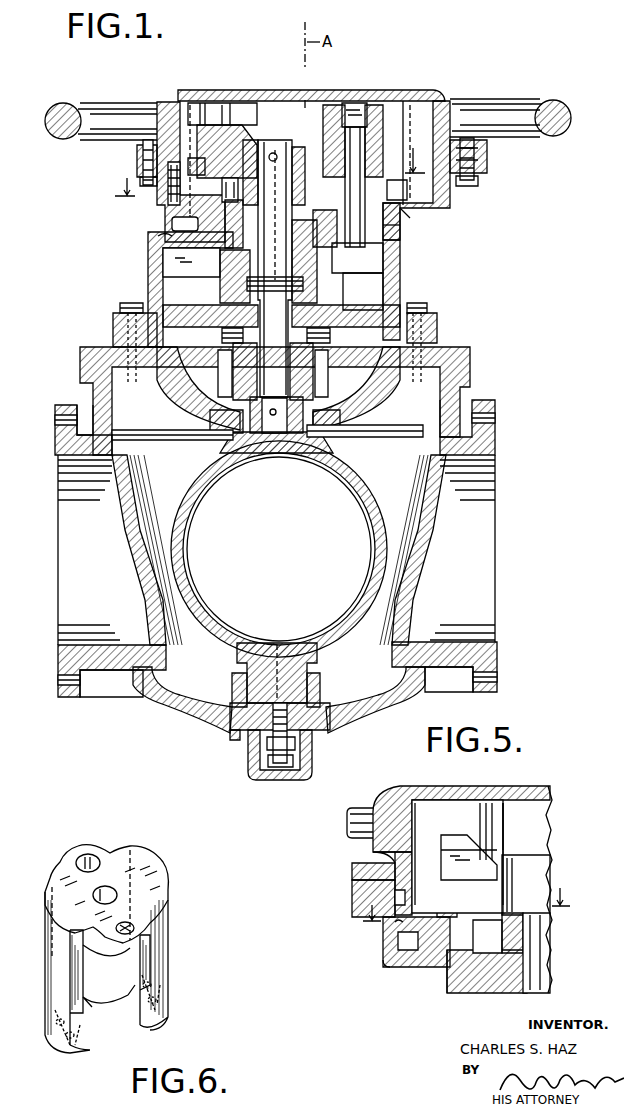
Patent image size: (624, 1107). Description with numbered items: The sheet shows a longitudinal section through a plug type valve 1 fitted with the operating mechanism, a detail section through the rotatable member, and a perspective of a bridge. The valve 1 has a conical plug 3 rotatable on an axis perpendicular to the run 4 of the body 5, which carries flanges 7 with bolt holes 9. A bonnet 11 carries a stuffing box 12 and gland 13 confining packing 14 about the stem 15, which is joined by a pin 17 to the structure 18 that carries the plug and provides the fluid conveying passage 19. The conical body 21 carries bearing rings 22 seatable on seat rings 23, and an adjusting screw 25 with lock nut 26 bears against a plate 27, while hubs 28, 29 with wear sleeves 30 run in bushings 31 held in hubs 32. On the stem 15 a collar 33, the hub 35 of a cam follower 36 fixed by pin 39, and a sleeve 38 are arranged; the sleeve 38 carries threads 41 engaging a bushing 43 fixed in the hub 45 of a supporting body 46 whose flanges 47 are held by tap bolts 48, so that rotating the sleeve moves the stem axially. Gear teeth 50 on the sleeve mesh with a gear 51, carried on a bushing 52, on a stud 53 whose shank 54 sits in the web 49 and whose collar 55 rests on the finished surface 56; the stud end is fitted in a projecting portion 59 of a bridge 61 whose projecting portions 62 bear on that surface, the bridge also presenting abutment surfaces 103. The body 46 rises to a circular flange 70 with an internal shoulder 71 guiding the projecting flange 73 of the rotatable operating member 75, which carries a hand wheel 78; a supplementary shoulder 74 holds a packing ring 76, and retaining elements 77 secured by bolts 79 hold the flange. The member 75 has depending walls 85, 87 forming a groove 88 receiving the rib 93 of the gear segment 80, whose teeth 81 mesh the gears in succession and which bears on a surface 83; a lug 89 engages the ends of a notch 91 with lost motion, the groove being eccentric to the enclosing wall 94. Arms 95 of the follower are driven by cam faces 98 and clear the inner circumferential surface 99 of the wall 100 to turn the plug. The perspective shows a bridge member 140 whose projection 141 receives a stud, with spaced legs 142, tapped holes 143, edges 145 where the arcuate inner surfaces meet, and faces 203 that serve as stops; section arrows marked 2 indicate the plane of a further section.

In FIG. 1, the valve 1 is at (471, 397).
In FIG. 1, the section line 2 is at (269, 173).
In FIG. 5, the section line 2 is at (466, 915).
In FIG. 1, the conical plug 3 is at (381, 447).
In FIG. 1, the run 4 is at (498, 497).
In FIG. 1, the body 5 is at (98, 398).
In FIG. 1, the flanges 7 is at (498, 441).
In FIG. 1, the bolt holes 9 is at (58, 423).
In FIG. 1, the bonnet 11 is at (475, 349).
In FIG. 1, the stuffing box 12 is at (320, 360).
In FIG. 1, the gland 13 is at (222, 337).
In FIG. 1, the packing 14 is at (227, 368).
In FIG. 1, the stem 15 is at (285, 313).
In FIG. 1, the pin 17 is at (276, 440).
In FIG. 1, the structure 18 is at (212, 475).
In FIG. 1, the fluid conveying passage 19 is at (350, 515).
In FIG. 1, the conical body 21 is at (420, 525).
In FIG. 1, the bearing rings 22 is at (430, 447).
In FIG. 1, the seat rings 23 is at (437, 443).
In FIG. 1, the adjusting screw 25 is at (305, 730).
In FIG. 1, the lock nut 26 is at (252, 752).
In FIG. 1, the plate 27 is at (232, 733).
In FIG. 1, the hub 28 is at (280, 680).
In FIG. 1, the hub 29 is at (245, 420).
In FIG. 1, the wear sleeves 30 is at (310, 432).
In FIG. 1, the bushings 31 is at (325, 405).
In FIG. 1, the hubs 32 is at (318, 392).
In FIG. 1, the collar 33 is at (281, 316).
In FIG. 1, the hub 35 is at (233, 140).
In FIG. 5, the hub 35 is at (538, 872).
In FIG. 1, the cam follower 36 is at (252, 125).
In FIG. 1, the sleeve 38 is at (296, 195).
In FIG. 5, the sleeve 38 is at (530, 952).
In FIG. 1, the pin 39 is at (276, 154).
In FIG. 1, the threads 41 is at (326, 228).
In FIG. 1, the bushing 43 is at (235, 278).
In FIG. 1, the hub 45 is at (191, 262).
In FIG. 1, the supporting body 46 is at (148, 257).
In FIG. 1, the flanges 47 is at (125, 320).
In FIG. 1, the tap bolts 48 is at (130, 303).
In FIG. 1, the web 49 is at (357, 258).
In FIG. 1, the gear teeth 50 is at (225, 224).
In FIG. 5, the gear teeth 50 is at (526, 933).
In FIG. 1, the gear 51 is at (395, 178).
In FIG. 1, the bushing 52 is at (396, 222).
In FIG. 1, the stud 53 is at (362, 135).
In FIG. 1, the shank 54 is at (363, 291).
In FIG. 1, the collar 55 is at (394, 240).
In FIG. 1, the finished surface 56 is at (394, 255).
In FIG. 1, the projecting portion 59 is at (388, 140).
In FIG. 1, the bridge 61 is at (352, 104).
In FIG. 1, the projecting portions 62 is at (273, 237).
In FIG. 1, the circular flange 70 is at (485, 172).
In FIG. 5, the circular flange 70 is at (352, 897).
In FIG. 1, the internal shoulder 71 is at (480, 158).
In FIG. 1, the projecting flange 73 is at (137, 165).
In FIG. 1, the supplementary shoulder 74 is at (172, 205).
In FIG. 1, the rotatable operating member 75 is at (428, 90).
In FIG. 5, the rotatable operating member 75 is at (455, 793).
In FIG. 1, the packing ring 76 is at (168, 190).
In FIG. 5, the packing ring 76 is at (395, 893).
In FIG. 1, the retaining elements 77 is at (140, 153).
In FIG. 5, the retaining elements 77 is at (352, 870).
In FIG. 1, the hand wheel 78 is at (553, 100).
In FIG. 5, the hand wheel 78 is at (350, 827).
In FIG. 1, the bolts 79 is at (148, 187).
In FIG. 1, the gear segment 80 is at (449, 227).
In FIG. 5, the gear segment 80 is at (425, 958).
In FIG. 5, the teeth 81 is at (487, 918).
In FIG. 1, the surface 83 is at (185, 225).
In FIG. 5, the surface 83 is at (445, 960).
In FIG. 1, the depending wall 85 is at (200, 172).
In FIG. 5, the depending wall 85 is at (419, 942).
In FIG. 5, the depending wall 87 is at (398, 938).
In FIG. 5, the groove 88 is at (447, 898).
In FIG. 1, the lug 89 is at (158, 237).
In FIG. 5, the lug 89 is at (398, 948).
In FIG. 5, the notch 91 is at (388, 966).
In FIG. 1, the rib 93 is at (190, 145).
In FIG. 5, the rib 93 is at (447, 887).
In FIG. 5, the enclosing wall 94 is at (373, 853).
In FIG. 1, the arms 95 is at (204, 120).
In FIG. 5, the arms 95 is at (465, 840).
In FIG. 1, the cam faces 98 is at (192, 105).
In FIG. 5, the cam faces 98 is at (480, 812).
In FIG. 1, the inner circumferential surface 99 is at (238, 92).
In FIG. 5, the inner circumferential surface 99 is at (530, 810).
In FIG. 1, the wall 100 is at (228, 95).
In FIG. 1, the abutment surfaces 103 is at (310, 100).
In FIG. 6, the bridge member 140 is at (177, 860).
In FIG. 6, the projection 141 is at (135, 933).
In FIG. 6, the legs 142 is at (170, 910).
In FIG. 6, the tapped holes 143 is at (148, 1003).
In FIG. 6, the edge 145 is at (88, 1000).
In FIG. 6, the faces 203 is at (168, 958).